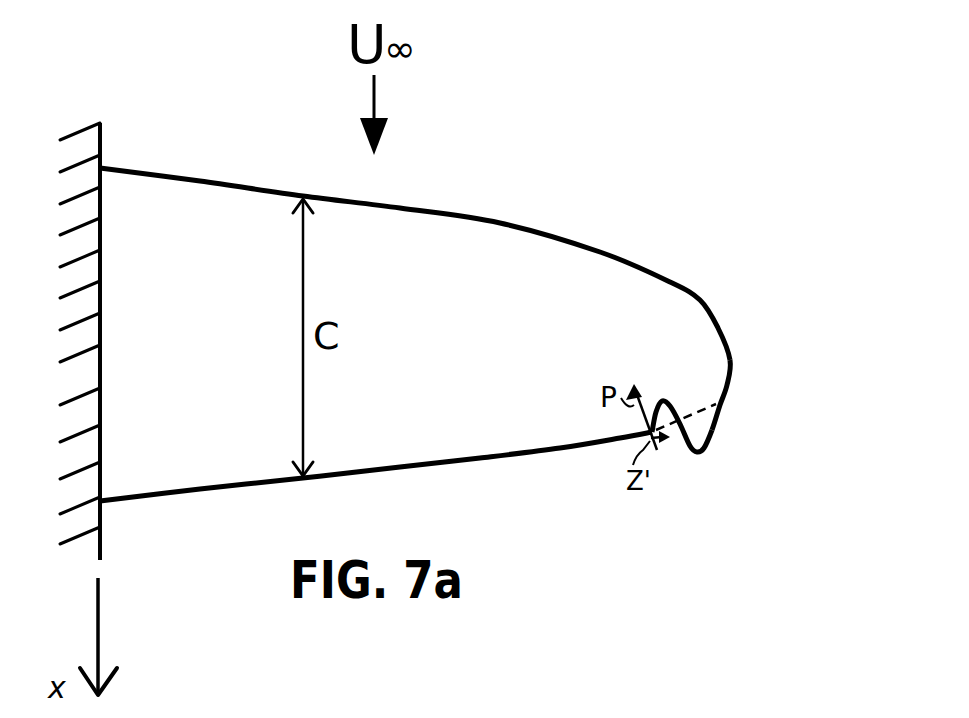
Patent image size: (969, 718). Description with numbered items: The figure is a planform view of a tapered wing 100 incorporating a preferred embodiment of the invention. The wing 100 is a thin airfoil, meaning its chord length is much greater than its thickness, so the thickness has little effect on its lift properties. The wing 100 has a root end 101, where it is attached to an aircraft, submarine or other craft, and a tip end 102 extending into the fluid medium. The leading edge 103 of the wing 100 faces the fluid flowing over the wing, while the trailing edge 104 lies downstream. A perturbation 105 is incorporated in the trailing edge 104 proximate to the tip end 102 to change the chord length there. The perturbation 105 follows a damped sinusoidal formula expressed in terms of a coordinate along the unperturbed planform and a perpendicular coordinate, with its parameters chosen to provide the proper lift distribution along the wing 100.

The tapered wing 100 is at (455, 333).
The root end 101 is at (125, 192).
The tip end 102 is at (732, 358).
The leading edge 103 is at (403, 205).
The trailing edge 104 is at (480, 442).
The perturbation 105 is at (711, 434).